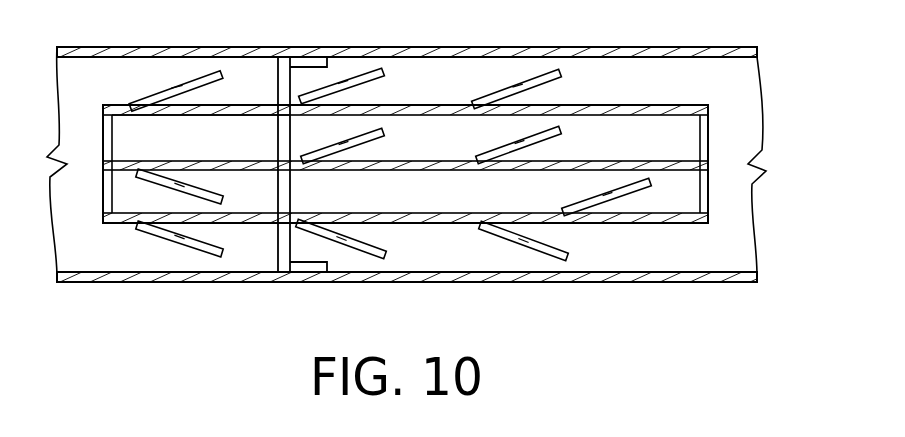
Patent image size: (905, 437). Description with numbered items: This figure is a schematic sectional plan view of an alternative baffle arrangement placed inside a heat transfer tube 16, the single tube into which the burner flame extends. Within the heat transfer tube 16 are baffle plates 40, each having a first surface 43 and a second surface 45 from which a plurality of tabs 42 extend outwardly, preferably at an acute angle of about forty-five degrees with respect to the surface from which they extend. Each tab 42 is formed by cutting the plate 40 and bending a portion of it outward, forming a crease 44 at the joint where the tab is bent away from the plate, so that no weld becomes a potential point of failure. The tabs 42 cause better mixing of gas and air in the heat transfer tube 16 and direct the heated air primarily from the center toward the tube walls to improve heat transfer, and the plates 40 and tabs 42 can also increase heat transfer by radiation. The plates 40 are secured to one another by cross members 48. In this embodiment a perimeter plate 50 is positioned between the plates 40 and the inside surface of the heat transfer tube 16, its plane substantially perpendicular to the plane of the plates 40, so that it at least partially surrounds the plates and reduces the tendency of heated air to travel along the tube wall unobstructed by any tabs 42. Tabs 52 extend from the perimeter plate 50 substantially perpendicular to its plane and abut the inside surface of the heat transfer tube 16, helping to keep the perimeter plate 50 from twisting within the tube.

The heat transfer tube 16 is at (677, 47).
The baffle plate 40 is at (409, 160).
The tab 42 is at (560, 77).
The first surface 43 is at (125, 113).
The crease 44 is at (470, 105).
The second surface 45 is at (128, 106).
The cross member 48 is at (103, 195).
The perimeter plate 50 is at (276, 263).
The tab 52 is at (308, 267).